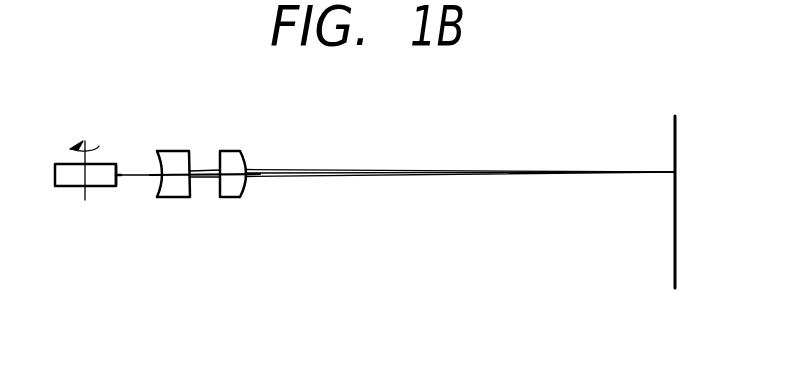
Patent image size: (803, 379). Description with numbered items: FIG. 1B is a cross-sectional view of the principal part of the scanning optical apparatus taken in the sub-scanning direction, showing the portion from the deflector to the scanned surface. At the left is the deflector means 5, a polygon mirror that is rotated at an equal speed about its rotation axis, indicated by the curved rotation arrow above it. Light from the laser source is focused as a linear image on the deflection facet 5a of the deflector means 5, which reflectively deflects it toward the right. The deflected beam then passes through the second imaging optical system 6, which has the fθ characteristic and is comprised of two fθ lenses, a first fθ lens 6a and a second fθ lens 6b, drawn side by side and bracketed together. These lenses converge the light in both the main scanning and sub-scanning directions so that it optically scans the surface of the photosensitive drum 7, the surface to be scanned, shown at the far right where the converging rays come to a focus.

The deflector means 5 is at (72, 183).
The deflection facet 5a is at (121, 164).
The second imaging optical system 6 is at (201, 227).
The first fθ lens 6a is at (167, 185).
The second fθ lens 6b is at (232, 185).
The photosensitive drum 7 is at (675, 207).